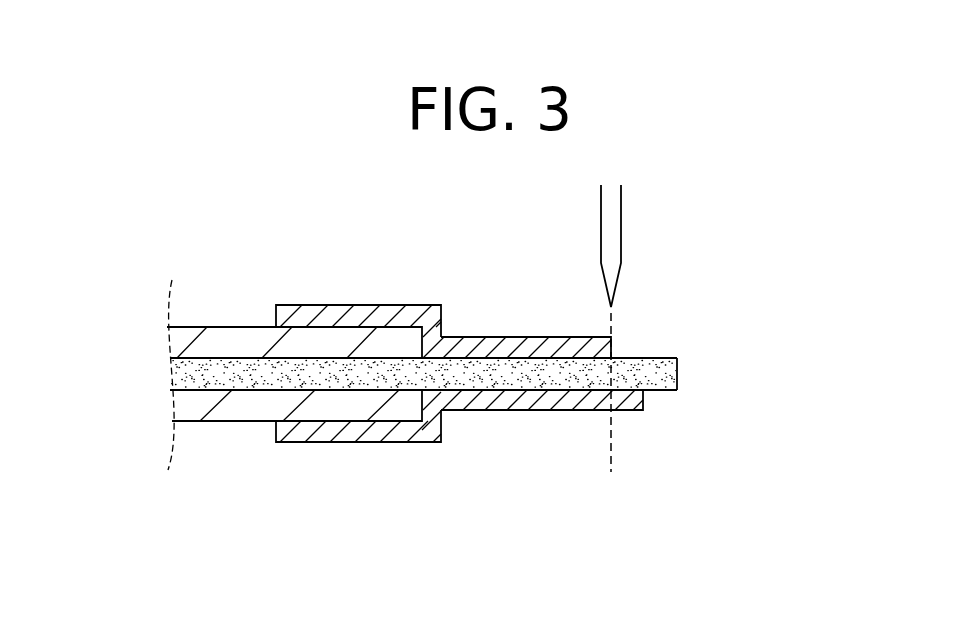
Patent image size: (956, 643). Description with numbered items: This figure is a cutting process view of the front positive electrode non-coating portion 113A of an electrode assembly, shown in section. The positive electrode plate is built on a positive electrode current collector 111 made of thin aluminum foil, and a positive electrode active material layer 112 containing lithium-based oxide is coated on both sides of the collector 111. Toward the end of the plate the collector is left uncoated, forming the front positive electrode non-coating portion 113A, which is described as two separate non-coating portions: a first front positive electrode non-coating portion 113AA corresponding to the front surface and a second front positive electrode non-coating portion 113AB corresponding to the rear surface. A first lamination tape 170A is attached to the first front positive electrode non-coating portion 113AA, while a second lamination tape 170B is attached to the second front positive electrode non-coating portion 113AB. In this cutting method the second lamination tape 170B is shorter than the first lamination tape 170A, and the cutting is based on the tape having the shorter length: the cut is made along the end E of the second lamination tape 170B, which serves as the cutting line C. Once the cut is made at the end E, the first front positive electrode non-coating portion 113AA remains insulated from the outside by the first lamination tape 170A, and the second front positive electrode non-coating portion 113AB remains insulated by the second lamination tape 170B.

The positive electrode current collector 111 is at (240, 367).
The positive electrode active material layer 112 is at (178, 403).
The second lamination tape 170B is at (475, 347).
The second front positive electrode non-coating portion 113AB is at (530, 348).
The first lamination tape 170A is at (473, 413).
The first front positive electrode non-coating portion 113AA is at (530, 412).
The front positive electrode non-coating portion 113A is at (668, 373).
The cutting line C is at (612, 318).
The end of the second lamination tape E is at (611, 489).